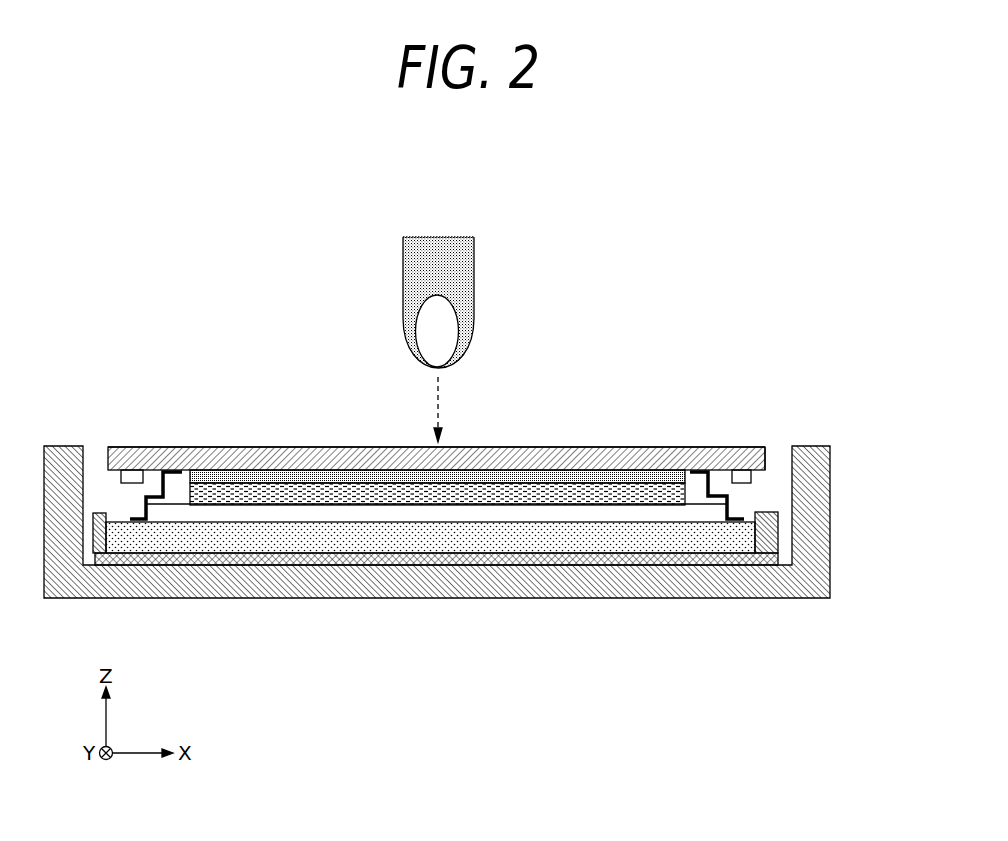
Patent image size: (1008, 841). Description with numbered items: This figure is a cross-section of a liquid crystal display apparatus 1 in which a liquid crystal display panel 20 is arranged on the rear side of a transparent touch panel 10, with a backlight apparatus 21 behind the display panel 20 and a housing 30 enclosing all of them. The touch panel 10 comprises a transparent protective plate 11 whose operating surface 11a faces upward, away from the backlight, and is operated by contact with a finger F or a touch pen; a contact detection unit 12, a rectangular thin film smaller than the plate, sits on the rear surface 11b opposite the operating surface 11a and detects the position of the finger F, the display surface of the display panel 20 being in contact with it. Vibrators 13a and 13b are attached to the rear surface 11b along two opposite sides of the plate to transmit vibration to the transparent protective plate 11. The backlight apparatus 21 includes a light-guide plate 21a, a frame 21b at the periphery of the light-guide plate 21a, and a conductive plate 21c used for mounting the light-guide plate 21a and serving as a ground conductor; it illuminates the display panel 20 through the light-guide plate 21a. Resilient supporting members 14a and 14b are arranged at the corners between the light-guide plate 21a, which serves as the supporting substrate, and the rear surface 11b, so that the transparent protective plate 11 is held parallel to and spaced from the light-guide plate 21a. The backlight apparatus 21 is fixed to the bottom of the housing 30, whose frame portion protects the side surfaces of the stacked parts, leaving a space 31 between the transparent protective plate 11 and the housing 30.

The liquid crystal display apparatus 1 is at (754, 261).
The touch panel 10 is at (700, 307).
The transparent protective plate 11 is at (597, 447).
The operating surface 11a is at (530, 448).
The rear surface 11b is at (780, 465).
The contact detection unit 12 is at (628, 477).
The vibrator 13a is at (133, 478).
The vibrator 13b is at (743, 480).
The resilient supporting member 14a is at (156, 497).
The resilient supporting member 14b is at (728, 505).
The liquid crystal display panel 20 is at (654, 497).
The backlight apparatus 21 is at (805, 675).
The light-guide plate 21a is at (725, 543).
The frame 21b is at (770, 554).
The conductive plate 21c is at (777, 552).
The housing 30 is at (810, 460).
The space 31 is at (98, 458).
The finger F is at (463, 265).